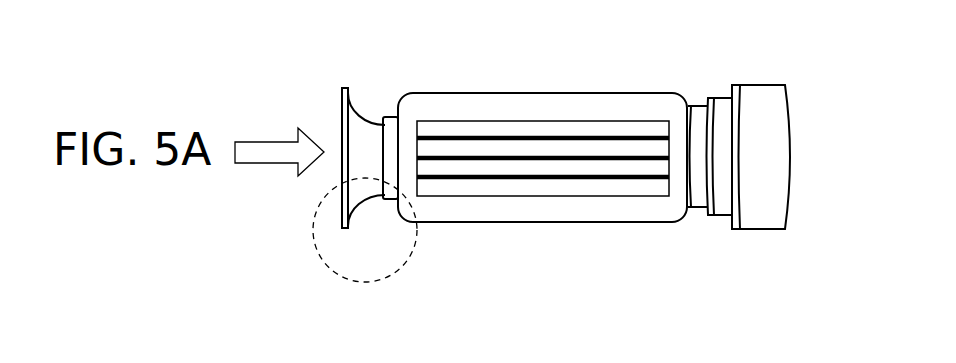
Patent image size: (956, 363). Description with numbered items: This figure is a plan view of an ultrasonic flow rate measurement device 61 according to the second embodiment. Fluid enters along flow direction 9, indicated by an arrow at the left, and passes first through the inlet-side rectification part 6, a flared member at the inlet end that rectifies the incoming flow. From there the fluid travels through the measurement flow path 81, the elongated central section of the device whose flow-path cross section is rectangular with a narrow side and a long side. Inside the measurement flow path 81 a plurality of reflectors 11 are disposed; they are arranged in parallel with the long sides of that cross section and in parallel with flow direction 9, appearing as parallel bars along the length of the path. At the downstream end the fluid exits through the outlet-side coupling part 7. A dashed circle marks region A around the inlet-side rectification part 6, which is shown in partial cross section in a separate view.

The inlet-side rectification part 6 is at (343, 87).
The outlet-side coupling part 7 is at (762, 102).
The flow direction 9 is at (273, 150).
The reflectors 11 is at (542, 177).
The ultrasonic flow rate measurement device 61 is at (632, 230).
The measurement flow path 81 is at (533, 222).
The region A is at (390, 263).